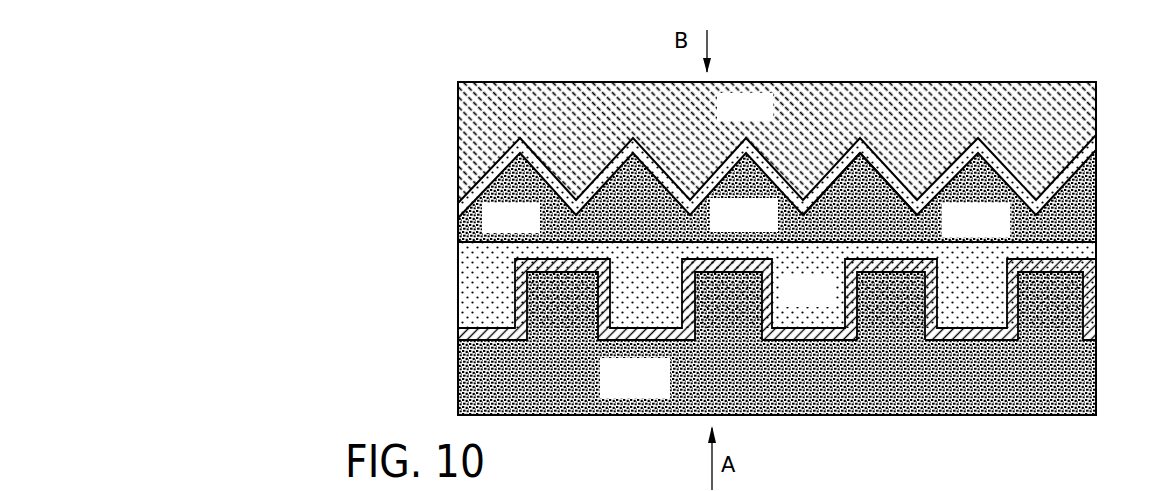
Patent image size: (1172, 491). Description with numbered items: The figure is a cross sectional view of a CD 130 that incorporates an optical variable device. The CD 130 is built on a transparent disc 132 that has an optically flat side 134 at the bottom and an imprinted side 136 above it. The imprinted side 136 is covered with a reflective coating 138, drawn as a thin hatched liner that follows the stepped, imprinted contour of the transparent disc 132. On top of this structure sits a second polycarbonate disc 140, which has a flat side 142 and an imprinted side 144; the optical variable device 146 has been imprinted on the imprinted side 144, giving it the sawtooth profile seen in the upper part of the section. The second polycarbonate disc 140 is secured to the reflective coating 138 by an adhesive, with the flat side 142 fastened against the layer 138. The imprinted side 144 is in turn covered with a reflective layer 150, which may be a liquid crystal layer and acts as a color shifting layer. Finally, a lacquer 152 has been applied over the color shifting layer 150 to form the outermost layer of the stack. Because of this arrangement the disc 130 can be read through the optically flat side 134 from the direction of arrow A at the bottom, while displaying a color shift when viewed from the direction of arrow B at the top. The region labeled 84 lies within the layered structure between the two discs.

The dielectric layer 84 is at (820, 302).
The CD 130 is at (621, 437).
The transparent disc 132 is at (654, 392).
The optically flat side 134 is at (797, 415).
The imprinted side 136 is at (858, 310).
The reflective coating 138 is at (1022, 325).
The second polycarbonate disc 140 is at (536, 231).
The flat side 142 is at (597, 242).
The imprinted side 144 is at (826, 195).
The optical variable device 146 is at (898, 196).
The reflective layer 150 is at (1097, 140).
The lacquer 152 is at (769, 122).